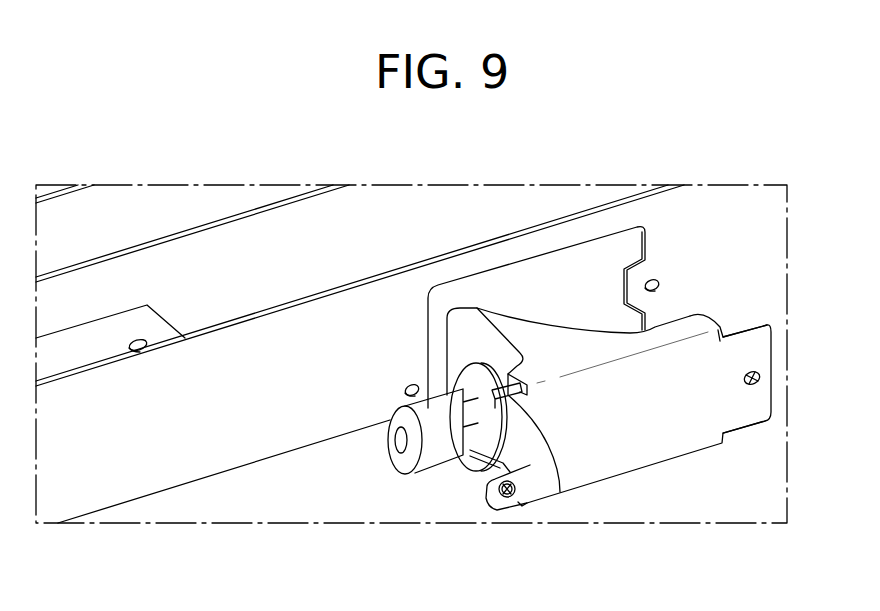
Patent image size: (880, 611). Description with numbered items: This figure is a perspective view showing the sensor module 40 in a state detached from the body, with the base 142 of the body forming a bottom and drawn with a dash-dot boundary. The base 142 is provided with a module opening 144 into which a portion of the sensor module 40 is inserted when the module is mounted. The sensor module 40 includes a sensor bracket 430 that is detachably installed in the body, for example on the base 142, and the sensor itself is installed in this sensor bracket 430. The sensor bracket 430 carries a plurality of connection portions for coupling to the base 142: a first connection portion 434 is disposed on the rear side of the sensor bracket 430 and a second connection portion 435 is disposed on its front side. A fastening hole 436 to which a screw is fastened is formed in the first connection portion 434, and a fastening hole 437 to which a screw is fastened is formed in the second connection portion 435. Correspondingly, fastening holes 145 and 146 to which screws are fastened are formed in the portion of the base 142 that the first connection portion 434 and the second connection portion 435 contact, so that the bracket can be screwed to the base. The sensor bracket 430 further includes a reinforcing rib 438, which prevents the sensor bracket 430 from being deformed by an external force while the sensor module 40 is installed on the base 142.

The sensor module 40 is at (613, 450).
The base 142 is at (729, 230).
The module opening 144 is at (600, 242).
The fastening hole 145 is at (658, 284).
The fastening hole 146 is at (417, 387).
The sensor bracket 430 is at (660, 455).
The first connection portion 434 is at (752, 427).
The second connection portion 435 is at (495, 503).
The fastening hole 436 is at (760, 377).
The fastening hole 437 is at (510, 497).
The reinforcing rib 438 is at (560, 492).